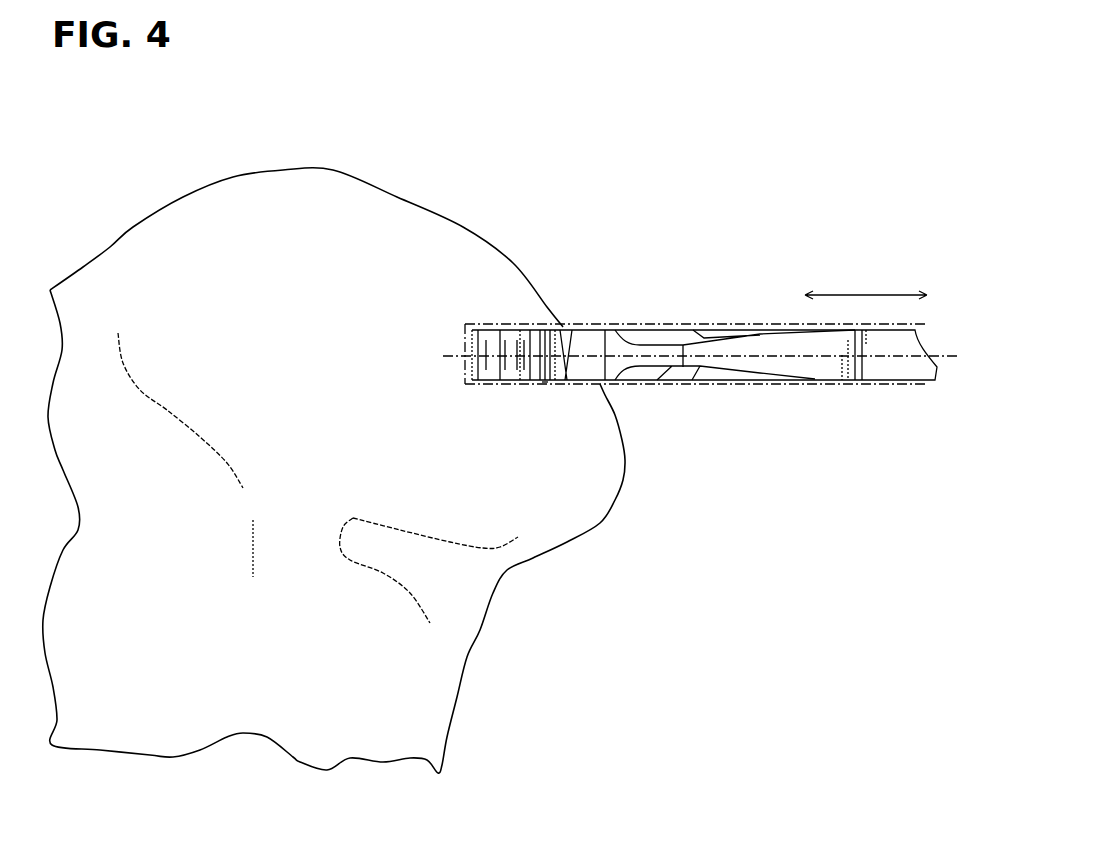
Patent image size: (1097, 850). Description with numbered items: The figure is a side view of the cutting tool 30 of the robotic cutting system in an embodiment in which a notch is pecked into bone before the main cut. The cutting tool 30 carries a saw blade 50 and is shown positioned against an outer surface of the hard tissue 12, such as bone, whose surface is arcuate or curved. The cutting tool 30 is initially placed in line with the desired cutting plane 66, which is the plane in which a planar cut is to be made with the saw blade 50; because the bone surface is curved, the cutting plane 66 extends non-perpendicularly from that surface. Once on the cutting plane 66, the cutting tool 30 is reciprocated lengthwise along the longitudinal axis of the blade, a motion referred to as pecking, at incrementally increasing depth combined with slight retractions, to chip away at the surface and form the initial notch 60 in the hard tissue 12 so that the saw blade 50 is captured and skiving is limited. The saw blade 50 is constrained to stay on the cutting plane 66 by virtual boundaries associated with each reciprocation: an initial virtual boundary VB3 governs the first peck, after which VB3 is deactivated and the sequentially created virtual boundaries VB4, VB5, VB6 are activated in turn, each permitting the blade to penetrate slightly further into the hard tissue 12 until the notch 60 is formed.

The hard tissue 12 is at (133, 283).
The cutting tool 30 is at (650, 326).
The saw blade 50 is at (590, 338).
The initial notch 60 is at (542, 382).
The cutting plane 66 is at (455, 352).
The initial virtual boundary VB3 is at (522, 365).
The virtual boundary VB4 is at (517, 367).
The virtual boundary VB5 is at (498, 368).
The virtual boundary VB6 is at (465, 366).